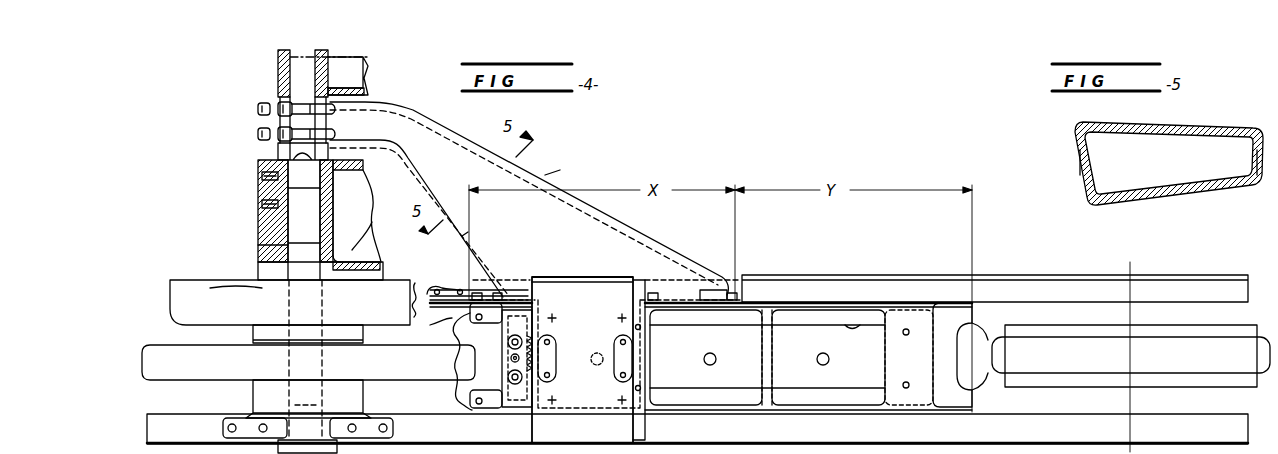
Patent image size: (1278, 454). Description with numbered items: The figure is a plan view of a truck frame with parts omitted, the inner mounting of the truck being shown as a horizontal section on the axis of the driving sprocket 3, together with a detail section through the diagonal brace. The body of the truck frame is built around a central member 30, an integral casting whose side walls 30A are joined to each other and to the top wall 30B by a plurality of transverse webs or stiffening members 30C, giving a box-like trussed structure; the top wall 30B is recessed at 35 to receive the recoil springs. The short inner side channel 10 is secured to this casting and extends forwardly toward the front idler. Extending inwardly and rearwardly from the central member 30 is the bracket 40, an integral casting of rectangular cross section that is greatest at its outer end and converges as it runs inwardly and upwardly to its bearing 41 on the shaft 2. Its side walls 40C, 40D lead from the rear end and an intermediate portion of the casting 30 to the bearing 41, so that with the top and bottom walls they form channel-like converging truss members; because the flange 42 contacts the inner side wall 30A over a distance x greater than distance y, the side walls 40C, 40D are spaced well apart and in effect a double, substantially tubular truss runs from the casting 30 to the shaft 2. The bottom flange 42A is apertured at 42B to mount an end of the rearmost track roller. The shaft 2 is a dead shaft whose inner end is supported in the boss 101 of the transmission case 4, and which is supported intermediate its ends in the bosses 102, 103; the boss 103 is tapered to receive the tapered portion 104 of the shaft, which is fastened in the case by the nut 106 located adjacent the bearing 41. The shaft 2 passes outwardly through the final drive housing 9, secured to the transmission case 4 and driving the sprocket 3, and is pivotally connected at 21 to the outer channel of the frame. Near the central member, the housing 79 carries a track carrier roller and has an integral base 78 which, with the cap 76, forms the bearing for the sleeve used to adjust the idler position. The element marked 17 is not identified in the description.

In FIG. 4, the boss 101 is at (283, 80).
In FIG. 4, the bearing 41 is at (290, 120).
In FIG. 4, the nut 106 is at (280, 150).
In FIG. 4, the boss 102 is at (284, 186).
In FIG. 4, the shaft 2 is at (300, 215).
In FIG. 4, the boss 103 is at (280, 245).
In FIG. 4, the transmission case 4 is at (333, 188).
In FIG. 4, the tapered portion 104 is at (307, 248).
In FIG. 4, the final drive housing 9 is at (175, 311).
In FIG. 4, the driving sprocket 3 is at (215, 368).
In FIG. 4, the pivotal connection 21 is at (330, 393).
In FIG. 4, the bracket 40 is at (608, 233).
In FIG. 5, the bracket 40 is at (1163, 200).
In FIG. 4, the side wall 40C is at (464, 234).
In FIG. 5, the side wall 40C is at (1081, 166).
In FIG. 4, the side wall 40D is at (545, 176).
In FIG. 5, the side wall 40D is at (1256, 166).
In FIG. 4, the flange 42 is at (727, 292).
In FIG. 4, the aperture 42B is at (420, 296).
In FIG. 4, the bottom flange 42A is at (445, 330).
In FIG. 4, the side wall 30A is at (452, 362).
In FIG. 4, the base 78 is at (505, 336).
In FIG. 4, the cap 76 is at (505, 374).
In FIG. 4, the housing 79 is at (588, 360).
In FIG. 4, the transverse webs 30C is at (545, 336).
In FIG. 4, the central member 30 is at (1078, 448).
In FIG. 4, the recess 35 is at (860, 325).
In FIG. 4, the inner side channel 10 is at (870, 285).
In FIG. 4, the top wall 30B is at (962, 328).
In FIG. 4, the roller 17 is at (1207, 345).